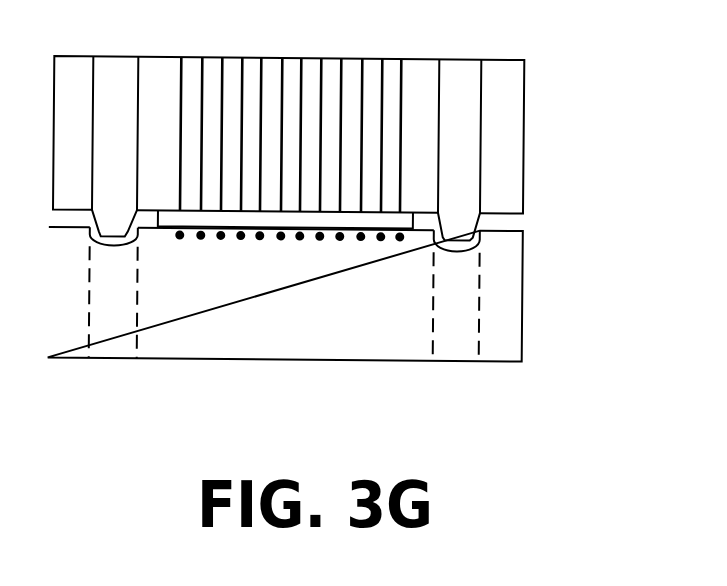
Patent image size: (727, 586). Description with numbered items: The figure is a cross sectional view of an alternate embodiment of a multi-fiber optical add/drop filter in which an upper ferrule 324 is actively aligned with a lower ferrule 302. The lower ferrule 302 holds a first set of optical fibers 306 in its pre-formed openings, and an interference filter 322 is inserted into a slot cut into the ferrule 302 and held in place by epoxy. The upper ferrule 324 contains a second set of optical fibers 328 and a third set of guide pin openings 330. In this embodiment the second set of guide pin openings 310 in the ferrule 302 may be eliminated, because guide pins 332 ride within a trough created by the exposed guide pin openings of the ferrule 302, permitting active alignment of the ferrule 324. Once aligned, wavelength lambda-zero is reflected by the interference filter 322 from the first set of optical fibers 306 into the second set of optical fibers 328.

The ferrule 302 is at (523, 309).
The first set of optical fibers 306 is at (281, 242).
The second set of guide pin openings 310 is at (497, 392).
The interference filter 322 is at (178, 217).
The ferrule 324 is at (523, 150).
The second set of optical fibers 328 is at (362, 57).
The third set of guide pin openings 330 is at (118, 57).
The guide pins 332 is at (460, 57).